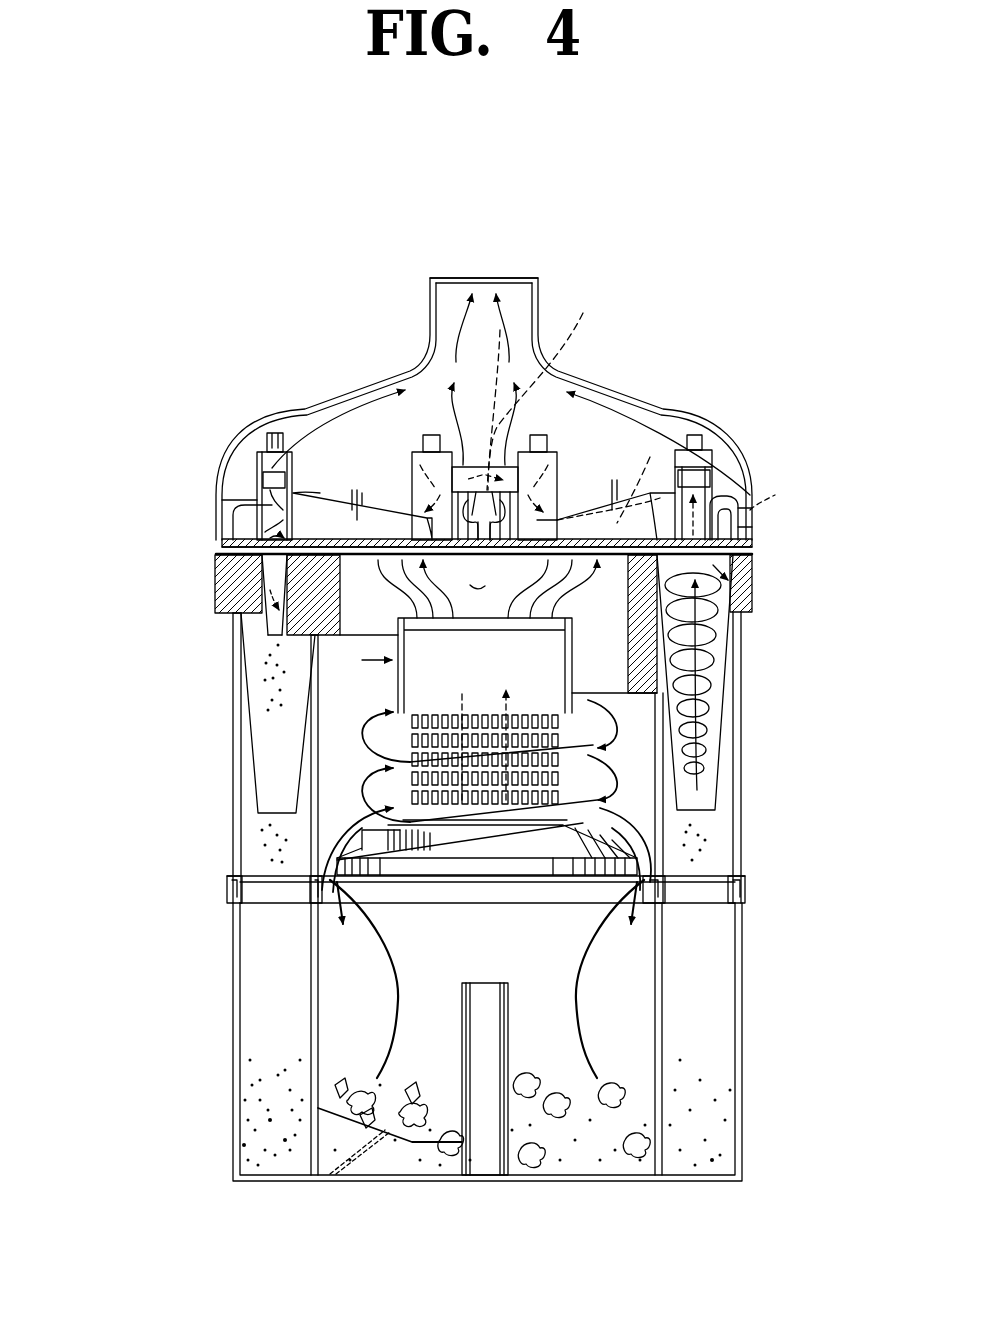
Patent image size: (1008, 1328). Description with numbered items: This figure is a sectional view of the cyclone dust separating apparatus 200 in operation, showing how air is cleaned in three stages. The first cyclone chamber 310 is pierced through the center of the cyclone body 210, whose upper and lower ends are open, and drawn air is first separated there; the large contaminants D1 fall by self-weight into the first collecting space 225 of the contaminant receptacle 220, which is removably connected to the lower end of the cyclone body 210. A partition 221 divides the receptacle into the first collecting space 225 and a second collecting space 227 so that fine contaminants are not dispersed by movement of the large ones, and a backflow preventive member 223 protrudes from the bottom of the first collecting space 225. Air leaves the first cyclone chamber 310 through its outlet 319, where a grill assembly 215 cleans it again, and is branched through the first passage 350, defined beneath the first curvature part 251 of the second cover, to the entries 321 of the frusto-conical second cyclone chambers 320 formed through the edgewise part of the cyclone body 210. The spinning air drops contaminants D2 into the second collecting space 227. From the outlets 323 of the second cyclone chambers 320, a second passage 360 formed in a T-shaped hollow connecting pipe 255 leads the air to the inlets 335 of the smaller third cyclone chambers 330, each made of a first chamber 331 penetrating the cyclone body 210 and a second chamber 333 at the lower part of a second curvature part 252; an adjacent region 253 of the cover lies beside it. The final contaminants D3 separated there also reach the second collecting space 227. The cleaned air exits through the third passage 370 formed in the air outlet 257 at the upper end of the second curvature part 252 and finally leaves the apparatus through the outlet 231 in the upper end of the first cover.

The cyclone dust separating apparatus 200 is at (280, 200).
The cyclone body 210 is at (745, 745).
The grill assembly 215 is at (305, 895).
The contaminant receptacle 220 is at (742, 1072).
The partition 221 is at (660, 1130).
The backflow preventive member 223 is at (425, 1180).
The first collecting space 225 is at (620, 995).
The second collecting space 227 is at (270, 1035).
The outlet 231 is at (535, 278).
The first curvature part 251 is at (600, 520).
The second curvature part 252 is at (722, 510).
The air chamber 253 is at (252, 470).
The T-shaped hollow connecting pipe 255 is at (405, 390).
The air outlet 257 is at (275, 433).
The first cyclone chamber 310 is at (337, 785).
The outlet of the first cyclone chamber 319 is at (265, 615).
The second cyclone chamber 320 is at (712, 620).
The entry of the second cyclone chamber 321 is at (745, 522).
The outlet of the second cyclone chamber 323 is at (725, 568).
The third cyclone chamber 330 is at (140, 578).
The first chamber 331 is at (245, 572).
The second chamber 333 is at (225, 512).
The inlet of the third cyclone chamber 335 is at (263, 478).
The first passage 350 is at (690, 450).
The second passage 360 is at (772, 482).
The third passage 370 is at (275, 452).
The contaminants D1 is at (530, 1165).
The contaminants D2 is at (270, 840).
The contaminants D3 is at (262, 660).